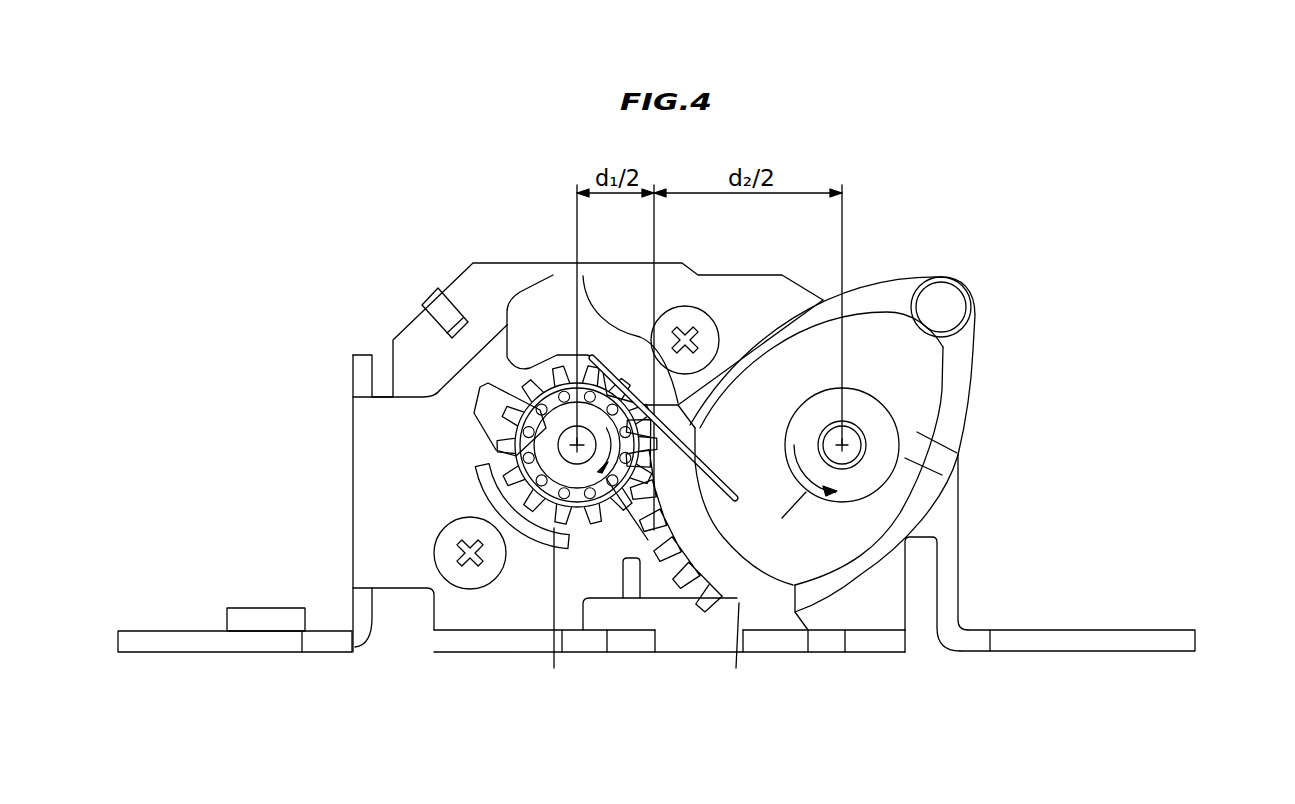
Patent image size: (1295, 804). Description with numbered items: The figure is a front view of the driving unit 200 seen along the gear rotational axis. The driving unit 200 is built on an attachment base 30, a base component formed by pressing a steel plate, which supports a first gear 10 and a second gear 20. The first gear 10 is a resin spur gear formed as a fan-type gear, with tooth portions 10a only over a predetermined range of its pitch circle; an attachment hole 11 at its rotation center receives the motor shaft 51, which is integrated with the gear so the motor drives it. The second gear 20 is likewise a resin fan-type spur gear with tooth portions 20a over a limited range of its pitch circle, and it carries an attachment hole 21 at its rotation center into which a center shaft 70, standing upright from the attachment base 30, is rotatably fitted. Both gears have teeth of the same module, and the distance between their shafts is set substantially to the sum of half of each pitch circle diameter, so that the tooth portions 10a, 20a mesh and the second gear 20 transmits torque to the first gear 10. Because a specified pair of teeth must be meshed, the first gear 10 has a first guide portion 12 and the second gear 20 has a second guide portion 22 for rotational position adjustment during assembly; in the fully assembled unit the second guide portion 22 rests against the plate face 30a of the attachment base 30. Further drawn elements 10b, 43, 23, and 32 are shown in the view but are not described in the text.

The driving unit 200 is at (918, 201).
The first gear 10 is at (513, 502).
The tooth portions 10a is at (553, 528).
The flange portion 10b is at (513, 482).
The attachment hole 11 is at (558, 448).
The motor shaft 51 is at (571, 437).
The first guide portion 12 is at (487, 398).
The lever 43 is at (606, 357).
The second gear 20 is at (840, 572).
The tooth portions 20a is at (700, 600).
The attachment hole 21 is at (862, 430).
The center shaft 70 is at (832, 433).
The pin 23 is at (948, 295).
The second guide portion 22 is at (790, 623).
The attachment base 30 is at (948, 515).
The plate face 30a is at (887, 630).
The foot 32 is at (182, 638).